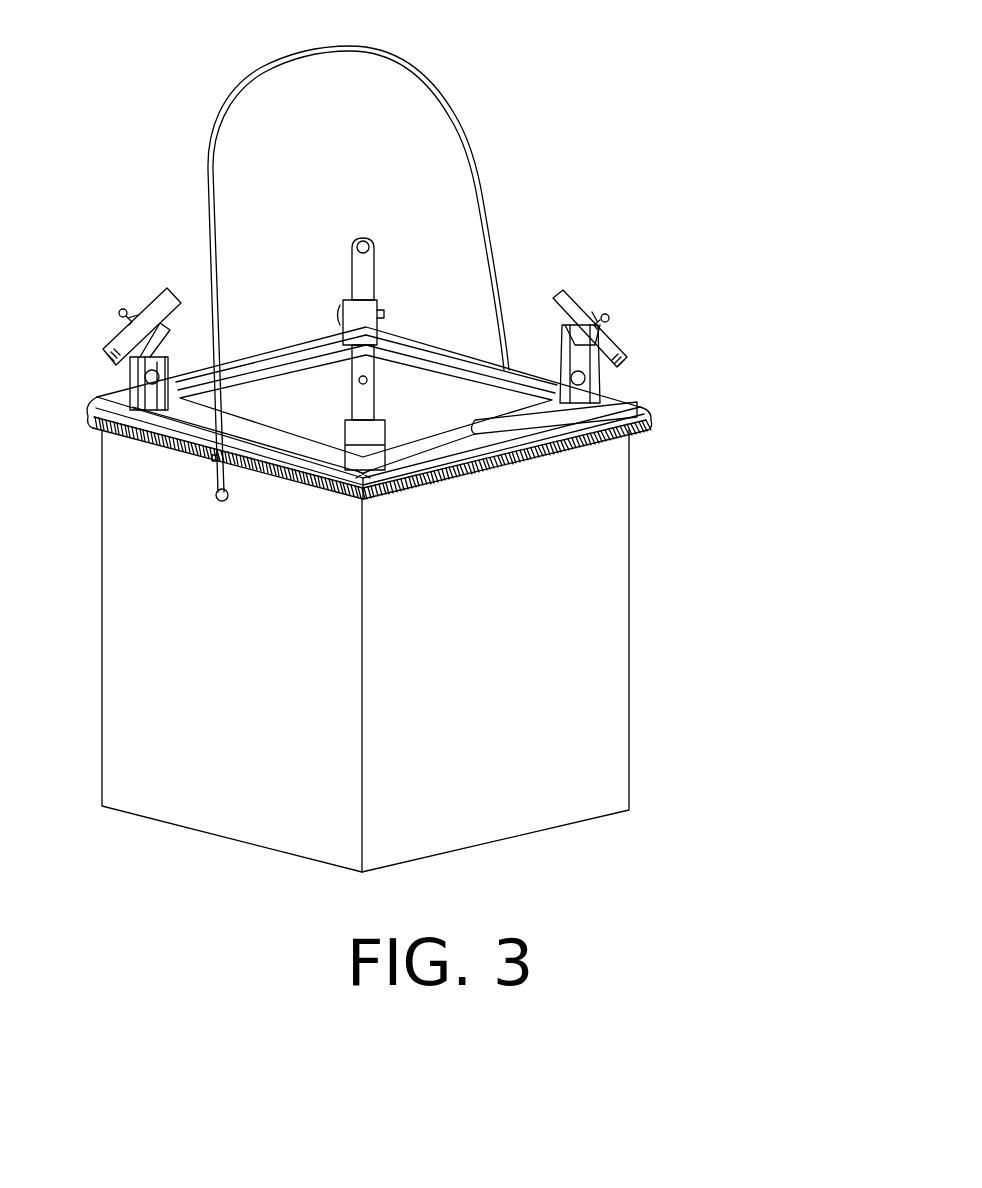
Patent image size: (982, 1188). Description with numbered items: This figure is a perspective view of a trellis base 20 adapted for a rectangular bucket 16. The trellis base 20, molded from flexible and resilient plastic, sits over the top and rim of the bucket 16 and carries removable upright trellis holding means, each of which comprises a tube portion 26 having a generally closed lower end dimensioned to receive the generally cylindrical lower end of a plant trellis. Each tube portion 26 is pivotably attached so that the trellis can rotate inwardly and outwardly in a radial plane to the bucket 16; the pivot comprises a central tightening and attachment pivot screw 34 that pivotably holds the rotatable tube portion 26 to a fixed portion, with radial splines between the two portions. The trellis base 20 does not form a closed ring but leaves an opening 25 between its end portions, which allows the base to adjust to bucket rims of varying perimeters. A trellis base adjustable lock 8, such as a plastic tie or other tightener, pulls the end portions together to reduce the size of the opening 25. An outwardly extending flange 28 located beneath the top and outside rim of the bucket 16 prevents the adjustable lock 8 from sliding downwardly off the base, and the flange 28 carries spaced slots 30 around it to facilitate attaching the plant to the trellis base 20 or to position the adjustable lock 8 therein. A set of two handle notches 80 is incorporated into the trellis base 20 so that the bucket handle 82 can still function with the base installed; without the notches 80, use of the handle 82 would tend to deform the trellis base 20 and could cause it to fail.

The trellis base adjustable lock 8 is at (505, 462).
The bucket 16 is at (512, 683).
The trellis base 20 is at (632, 186).
The opening 25 is at (467, 432).
The tube portion 26 is at (613, 331).
The outwardly extending flange 28 is at (648, 422).
The spaced slots 30 is at (432, 478).
The pivot screw 34 is at (172, 373).
The handle notches 80 is at (212, 470).
The bucket handle 82 is at (468, 137).